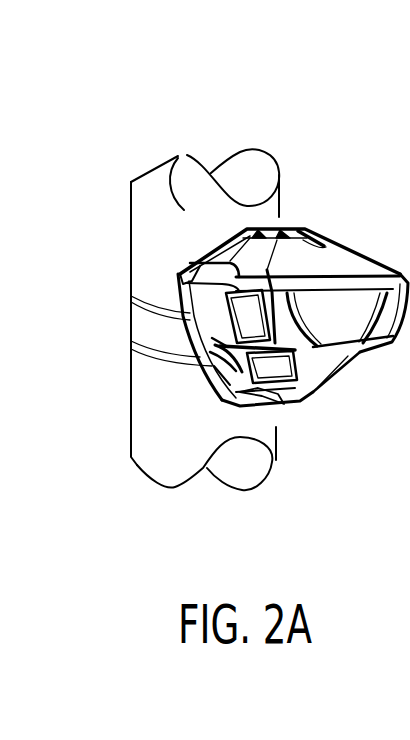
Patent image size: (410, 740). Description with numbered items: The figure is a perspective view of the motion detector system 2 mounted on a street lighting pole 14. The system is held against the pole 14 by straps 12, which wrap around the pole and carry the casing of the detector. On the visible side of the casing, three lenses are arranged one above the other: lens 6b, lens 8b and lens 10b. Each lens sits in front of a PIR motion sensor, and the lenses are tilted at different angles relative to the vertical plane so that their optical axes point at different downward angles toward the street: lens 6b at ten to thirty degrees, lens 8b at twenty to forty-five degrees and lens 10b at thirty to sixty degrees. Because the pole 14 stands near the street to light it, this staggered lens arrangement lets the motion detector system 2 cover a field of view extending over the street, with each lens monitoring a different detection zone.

The motion detector system 2 is at (293, 291).
The straps 12 is at (148, 356).
The pole 14 is at (178, 158).
The lens 6b is at (246, 329).
The lens 8b is at (273, 370).
The lens 10b is at (265, 394).